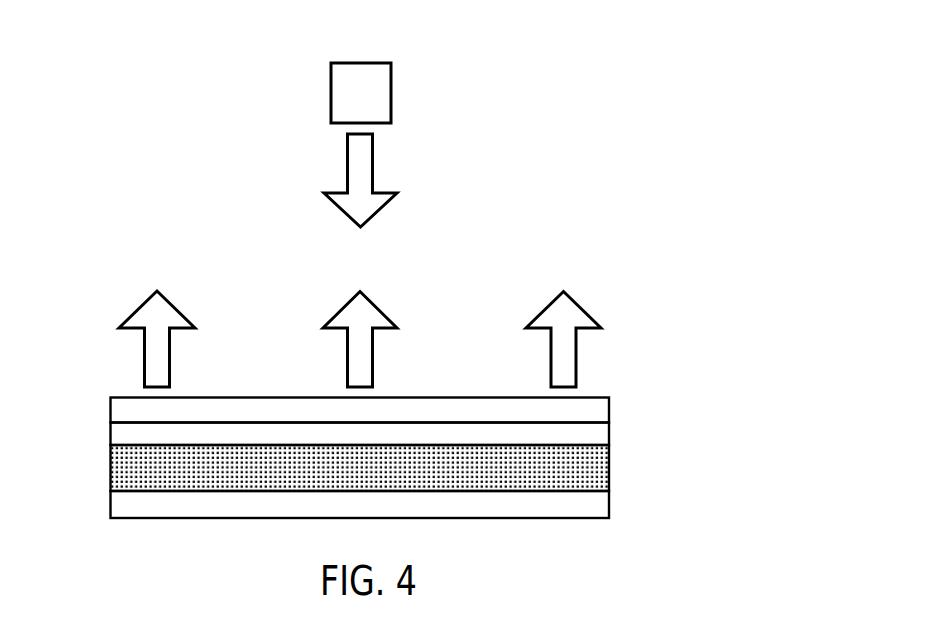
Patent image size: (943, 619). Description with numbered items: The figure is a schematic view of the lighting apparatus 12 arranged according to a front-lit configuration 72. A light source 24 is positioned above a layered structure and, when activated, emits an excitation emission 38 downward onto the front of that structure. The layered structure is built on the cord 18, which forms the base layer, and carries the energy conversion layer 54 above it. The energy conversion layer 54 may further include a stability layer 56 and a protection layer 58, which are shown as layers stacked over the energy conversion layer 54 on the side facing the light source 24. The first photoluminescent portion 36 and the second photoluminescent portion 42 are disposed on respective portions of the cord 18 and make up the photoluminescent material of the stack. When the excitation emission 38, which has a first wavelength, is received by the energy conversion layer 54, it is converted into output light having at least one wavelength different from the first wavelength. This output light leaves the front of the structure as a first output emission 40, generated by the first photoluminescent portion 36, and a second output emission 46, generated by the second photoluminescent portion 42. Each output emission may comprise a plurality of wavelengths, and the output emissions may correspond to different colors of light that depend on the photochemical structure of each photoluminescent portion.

The lighting apparatus 12 is at (384, 292).
The front-lit configuration 72 is at (384, 292).
The light source 24 is at (346, 104).
The excitation emission 38 is at (368, 167).
The first output emission 40 is at (390, 339).
The second output emission 46 is at (165, 363).
The first photoluminescent portion 36 is at (384, 455).
The second photoluminescent portion 42 is at (384, 455).
The protection layer 58 is at (116, 411).
The stability layer 56 is at (116, 435).
The energy conversion layer 54 is at (116, 473).
The cord 18 is at (116, 503).